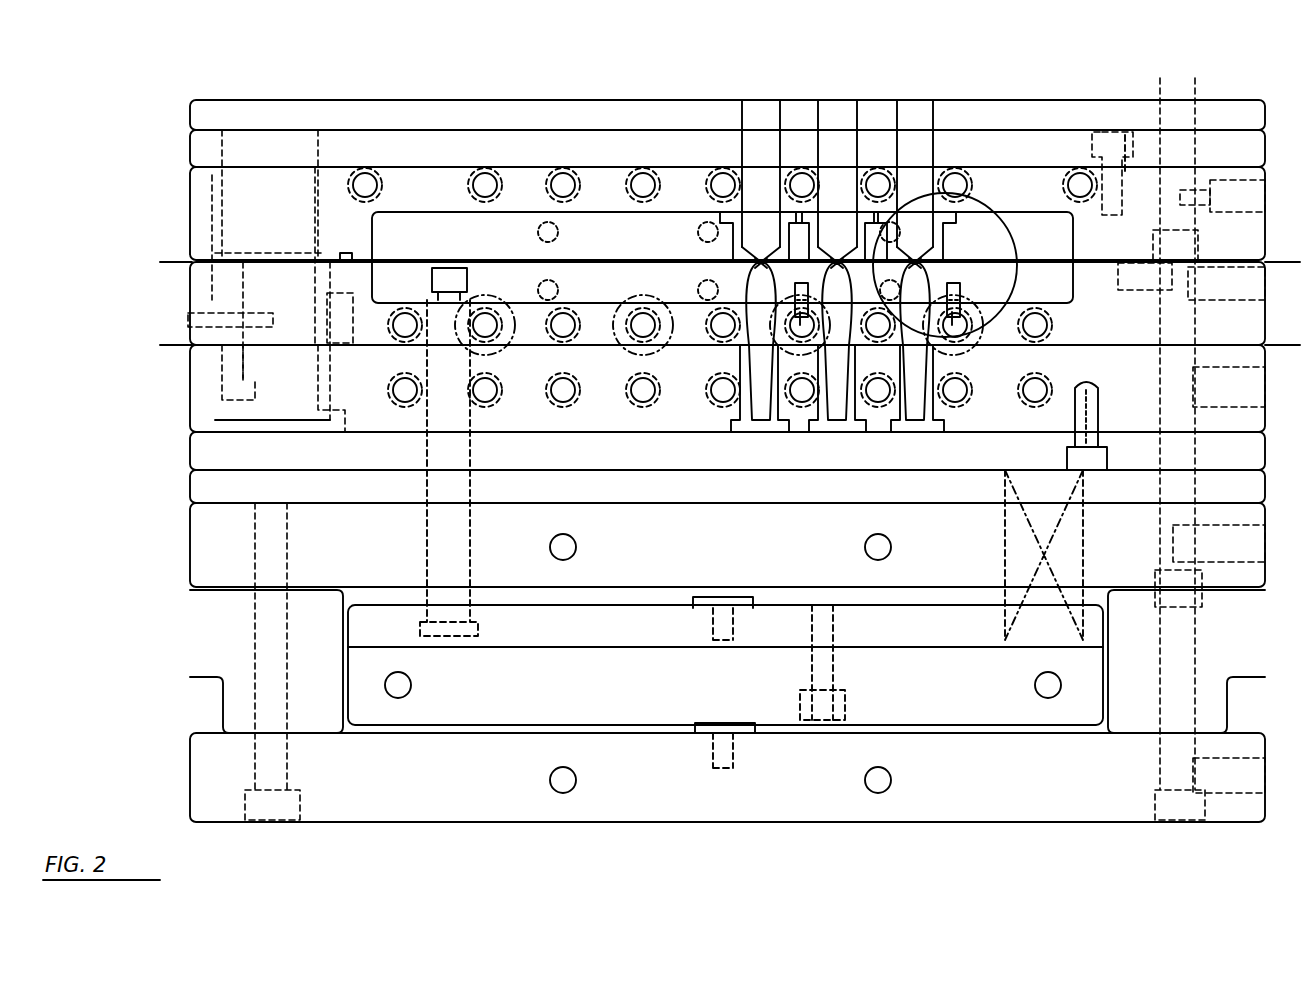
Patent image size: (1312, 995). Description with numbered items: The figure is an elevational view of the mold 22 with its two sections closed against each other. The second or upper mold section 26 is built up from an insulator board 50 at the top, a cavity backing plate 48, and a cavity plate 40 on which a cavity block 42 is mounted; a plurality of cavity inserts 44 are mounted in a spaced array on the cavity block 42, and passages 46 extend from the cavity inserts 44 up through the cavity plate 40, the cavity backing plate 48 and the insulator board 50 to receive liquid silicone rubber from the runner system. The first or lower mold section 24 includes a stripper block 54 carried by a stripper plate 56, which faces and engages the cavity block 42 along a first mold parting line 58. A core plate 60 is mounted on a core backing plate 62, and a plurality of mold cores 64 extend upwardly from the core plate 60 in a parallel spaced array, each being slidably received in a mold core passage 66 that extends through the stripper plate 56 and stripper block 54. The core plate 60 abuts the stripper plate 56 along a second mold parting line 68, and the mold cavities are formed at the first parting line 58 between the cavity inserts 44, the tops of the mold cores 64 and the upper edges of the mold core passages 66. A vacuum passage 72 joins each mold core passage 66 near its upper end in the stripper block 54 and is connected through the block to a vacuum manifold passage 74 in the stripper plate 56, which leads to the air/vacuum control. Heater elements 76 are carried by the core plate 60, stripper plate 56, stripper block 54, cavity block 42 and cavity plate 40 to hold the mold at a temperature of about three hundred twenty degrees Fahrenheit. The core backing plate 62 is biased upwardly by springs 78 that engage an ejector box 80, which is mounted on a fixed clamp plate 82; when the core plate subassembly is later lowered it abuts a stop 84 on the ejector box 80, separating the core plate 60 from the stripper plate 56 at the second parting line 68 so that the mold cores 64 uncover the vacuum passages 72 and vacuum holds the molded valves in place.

The mold 22 is at (283, 88).
The first or lower mold section 24 is at (182, 820).
The second or upper mold section 26 is at (182, 260).
The cavity plate 40 is at (1137, 170).
The cavity block 42 is at (1019, 221).
The cavity insert 44 is at (800, 236).
The passage 46 is at (760, 90).
The cavity backing plate 48 is at (556, 131).
The insulator board 50 is at (437, 103).
The stripper block 54 is at (402, 278).
The stripper plate 56 is at (285, 420).
The first mold parting line 58 is at (1276, 262).
The core plate 60 is at (600, 417).
The core backing plate 62 is at (660, 465).
The mold core 64 is at (838, 417).
The mold core passage 66 is at (735, 372).
The second mold parting line 68 is at (175, 345).
The vacuum passage 72 is at (937, 282).
The vacuum manifold passage 74 is at (832, 268).
The heater element 76 is at (537, 224).
The spring 78 is at (1002, 543).
The ejector box 80 is at (990, 714).
The clamp plate 82 is at (720, 818).
The stop 84 is at (756, 600).